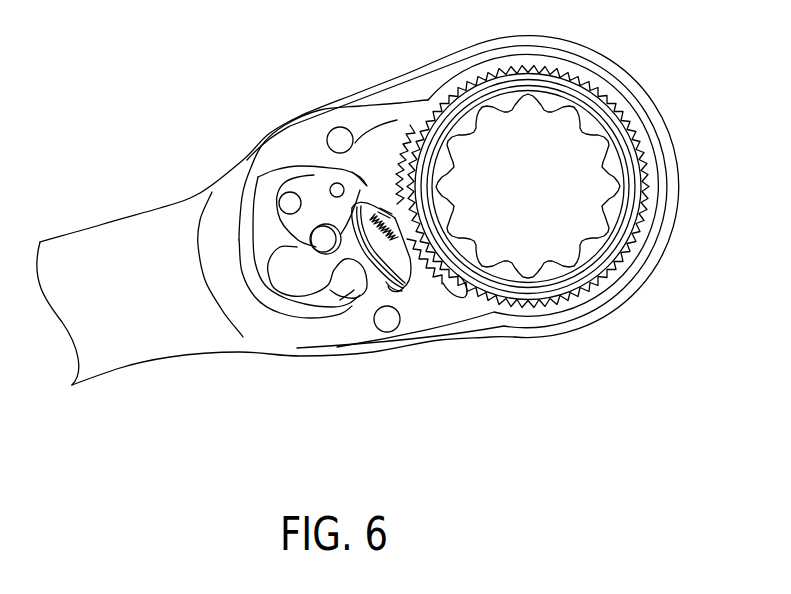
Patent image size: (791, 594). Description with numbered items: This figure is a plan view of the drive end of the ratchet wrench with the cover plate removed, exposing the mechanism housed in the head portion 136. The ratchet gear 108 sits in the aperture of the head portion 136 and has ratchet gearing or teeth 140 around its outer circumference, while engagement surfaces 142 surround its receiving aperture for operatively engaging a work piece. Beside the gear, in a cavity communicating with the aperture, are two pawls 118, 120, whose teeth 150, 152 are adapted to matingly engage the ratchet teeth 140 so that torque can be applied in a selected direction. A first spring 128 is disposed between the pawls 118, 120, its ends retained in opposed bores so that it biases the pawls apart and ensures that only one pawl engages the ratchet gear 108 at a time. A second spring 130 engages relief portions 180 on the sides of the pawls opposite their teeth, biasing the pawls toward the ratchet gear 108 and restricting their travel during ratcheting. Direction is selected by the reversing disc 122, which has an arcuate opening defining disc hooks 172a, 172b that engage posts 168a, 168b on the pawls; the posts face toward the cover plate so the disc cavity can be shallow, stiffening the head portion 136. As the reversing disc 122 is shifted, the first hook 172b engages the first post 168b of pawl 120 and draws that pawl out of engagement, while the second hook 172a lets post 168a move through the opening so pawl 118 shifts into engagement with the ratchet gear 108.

The ratchet gear 108 is at (627, 240).
The pawl 118 is at (457, 285).
The pawl 120 is at (396, 165).
The reversing disc 122 is at (298, 300).
The first spring 128 is at (395, 218).
The second spring 130 is at (362, 293).
The head portion 136 is at (678, 150).
The ratchet gearing or teeth 140 is at (620, 98).
The engagement surfaces 142 is at (607, 197).
The teeth 150 is at (447, 280).
The teeth 152 is at (410, 195).
The post 168a is at (412, 257).
The post 168b is at (378, 217).
The disc hook 172a is at (348, 297).
The disc hook 172b is at (365, 178).
The relief portions 180 is at (390, 287).